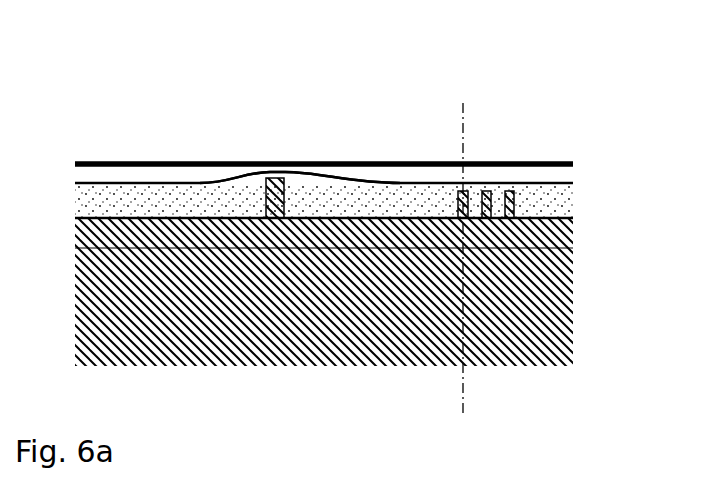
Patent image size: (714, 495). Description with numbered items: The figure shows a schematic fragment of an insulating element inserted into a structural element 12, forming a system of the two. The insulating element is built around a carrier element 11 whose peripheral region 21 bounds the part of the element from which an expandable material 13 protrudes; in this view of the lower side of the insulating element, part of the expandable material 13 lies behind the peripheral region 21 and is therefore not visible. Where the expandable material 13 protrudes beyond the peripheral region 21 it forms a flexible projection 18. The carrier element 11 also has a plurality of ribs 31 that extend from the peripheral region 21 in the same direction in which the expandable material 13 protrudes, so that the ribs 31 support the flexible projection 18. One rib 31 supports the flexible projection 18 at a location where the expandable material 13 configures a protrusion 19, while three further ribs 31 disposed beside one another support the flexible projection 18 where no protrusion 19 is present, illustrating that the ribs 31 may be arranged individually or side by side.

The carrier element 11 is at (574, 322).
The peripheral region 21 is at (573, 232).
The flexible projection 18 is at (555, 205).
The expandable material 13 is at (172, 200).
The protrusion 19 is at (295, 180).
The structural element 12 is at (562, 163).
The ribs 31 is at (277, 178).